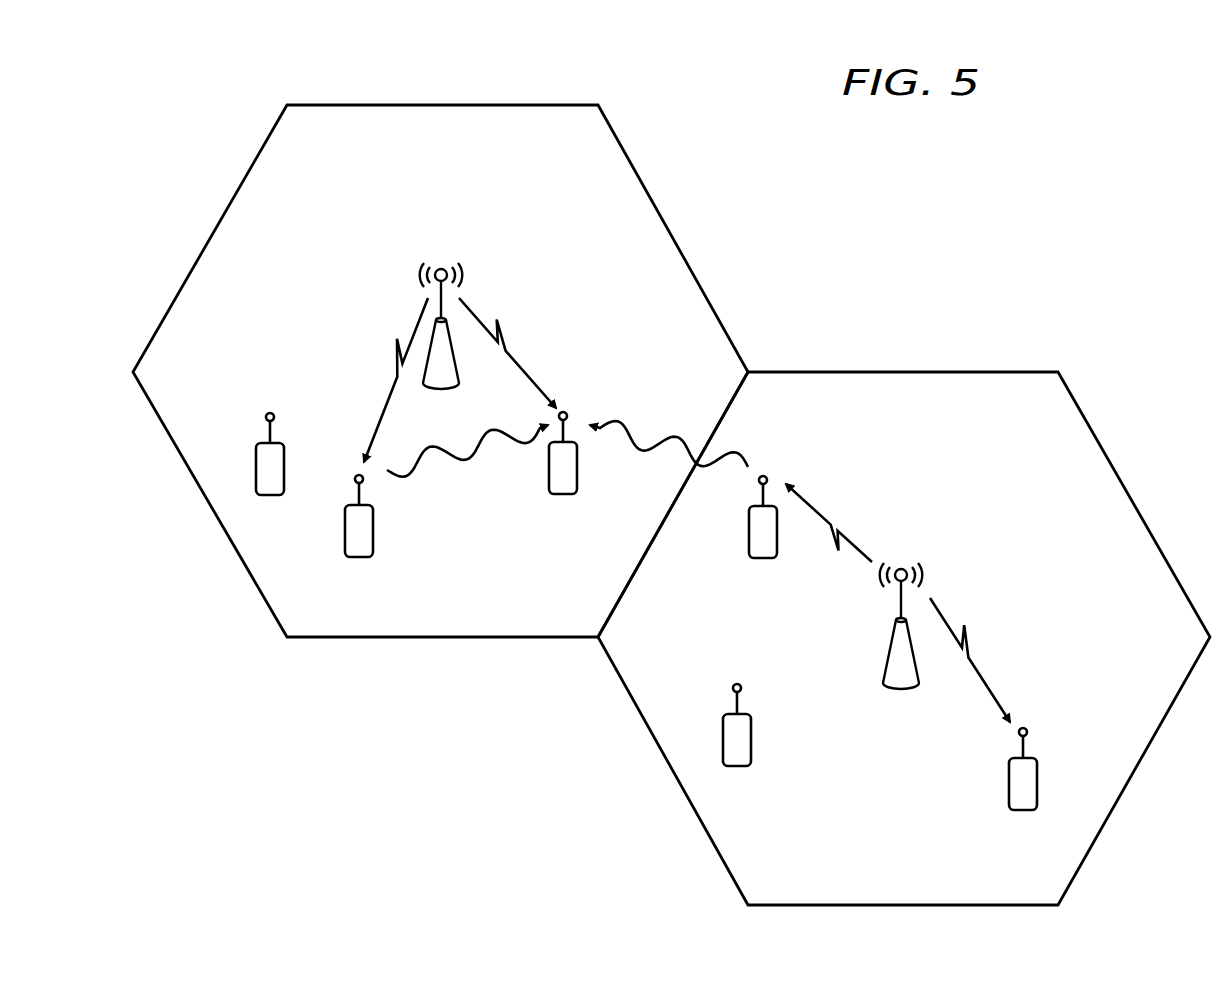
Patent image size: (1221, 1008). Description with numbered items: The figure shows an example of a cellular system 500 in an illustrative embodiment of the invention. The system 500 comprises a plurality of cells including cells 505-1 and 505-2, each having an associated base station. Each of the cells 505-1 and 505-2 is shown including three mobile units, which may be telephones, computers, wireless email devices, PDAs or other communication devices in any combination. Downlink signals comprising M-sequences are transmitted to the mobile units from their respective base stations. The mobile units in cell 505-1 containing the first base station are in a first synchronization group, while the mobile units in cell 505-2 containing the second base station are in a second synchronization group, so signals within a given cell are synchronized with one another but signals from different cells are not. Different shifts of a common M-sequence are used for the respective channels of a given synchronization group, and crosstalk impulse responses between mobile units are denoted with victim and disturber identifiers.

The cellular system 500 is at (894, 148).
The cell 505-1 is at (384, 105).
The cell 505-2 is at (958, 372).